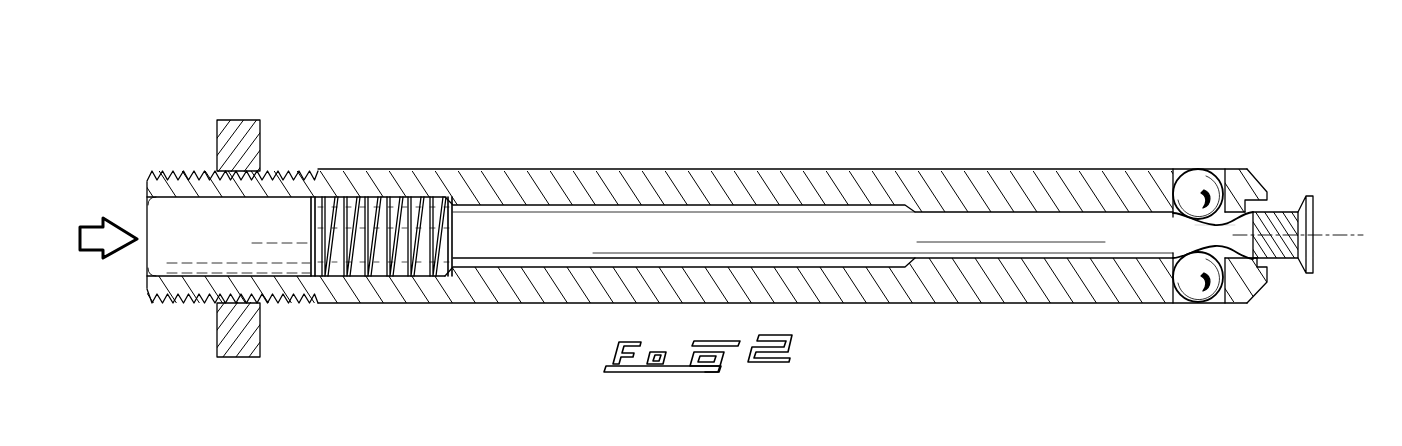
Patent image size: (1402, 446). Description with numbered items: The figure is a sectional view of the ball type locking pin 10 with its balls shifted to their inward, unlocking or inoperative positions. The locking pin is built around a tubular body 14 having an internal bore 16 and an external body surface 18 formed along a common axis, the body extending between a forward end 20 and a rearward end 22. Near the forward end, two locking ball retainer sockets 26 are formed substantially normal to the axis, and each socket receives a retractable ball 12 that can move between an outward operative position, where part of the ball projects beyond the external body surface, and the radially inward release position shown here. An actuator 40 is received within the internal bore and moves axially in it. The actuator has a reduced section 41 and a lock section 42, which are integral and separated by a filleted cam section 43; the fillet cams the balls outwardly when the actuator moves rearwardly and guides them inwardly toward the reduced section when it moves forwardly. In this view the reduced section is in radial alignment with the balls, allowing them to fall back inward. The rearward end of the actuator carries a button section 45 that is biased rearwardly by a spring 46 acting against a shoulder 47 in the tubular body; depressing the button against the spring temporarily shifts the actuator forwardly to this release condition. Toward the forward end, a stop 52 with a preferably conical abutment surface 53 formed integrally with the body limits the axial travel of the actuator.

The ball type locking pin 10 is at (908, 104).
The retractable ball 12 is at (1202, 183).
The tubular body 14 is at (747, 160).
The internal bore 16 is at (1025, 213).
The external body surface 18 is at (980, 305).
The forward end 20 is at (1258, 170).
The rearward end 22 is at (145, 288).
The locking ball retainer socket 26 is at (1179, 160).
The actuator 40 is at (1090, 214).
The reduced section 41 is at (1238, 215).
The lock section 42 is at (1283, 250).
The filleted cam section 43 is at (1250, 262).
The button section 45 is at (187, 217).
The spring 46 is at (397, 267).
The shoulder 47 is at (457, 200).
The stop 52 is at (1286, 195).
The abutment surface 53 is at (1238, 290).